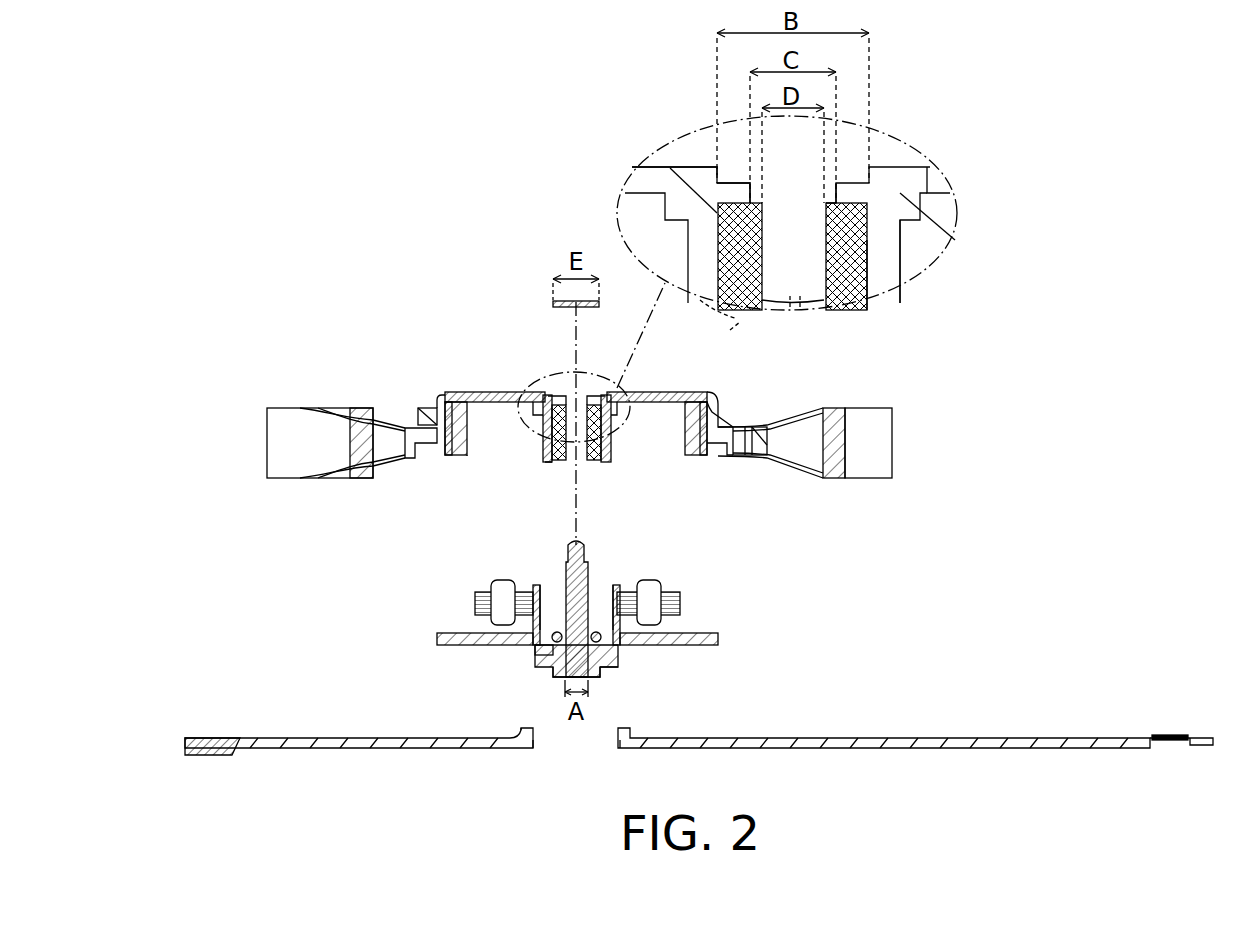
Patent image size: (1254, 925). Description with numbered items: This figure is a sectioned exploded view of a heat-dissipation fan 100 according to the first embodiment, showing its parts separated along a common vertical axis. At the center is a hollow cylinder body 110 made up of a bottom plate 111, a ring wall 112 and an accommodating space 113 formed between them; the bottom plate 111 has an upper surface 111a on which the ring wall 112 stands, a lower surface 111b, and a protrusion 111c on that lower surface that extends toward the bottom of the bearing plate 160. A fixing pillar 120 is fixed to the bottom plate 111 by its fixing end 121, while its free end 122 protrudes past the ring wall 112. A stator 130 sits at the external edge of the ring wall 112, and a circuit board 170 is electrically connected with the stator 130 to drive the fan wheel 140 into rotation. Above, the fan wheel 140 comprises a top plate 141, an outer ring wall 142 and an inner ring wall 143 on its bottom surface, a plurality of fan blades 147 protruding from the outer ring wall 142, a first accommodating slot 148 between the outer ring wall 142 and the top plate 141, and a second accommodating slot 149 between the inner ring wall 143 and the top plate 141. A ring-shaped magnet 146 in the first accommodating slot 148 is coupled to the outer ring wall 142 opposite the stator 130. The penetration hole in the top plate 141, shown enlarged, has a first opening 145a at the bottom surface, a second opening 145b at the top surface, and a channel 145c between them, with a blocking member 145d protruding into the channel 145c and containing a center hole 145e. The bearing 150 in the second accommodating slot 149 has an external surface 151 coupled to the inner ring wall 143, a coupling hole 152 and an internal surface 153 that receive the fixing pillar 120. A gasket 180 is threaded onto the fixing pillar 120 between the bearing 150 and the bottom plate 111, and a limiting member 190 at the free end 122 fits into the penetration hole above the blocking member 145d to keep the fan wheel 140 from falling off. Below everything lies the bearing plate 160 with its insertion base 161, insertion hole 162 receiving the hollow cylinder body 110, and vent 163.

The heat-dissipation fan 100 is at (326, 267).
The hollow cylinder body 110 is at (642, 572).
The bottom plate 111 is at (618, 660).
The upper surface 111a is at (612, 630).
The lower surface 111b is at (560, 678).
The protrusion 111c is at (612, 672).
The ring wall 112 is at (533, 630).
The accommodating space 113 is at (553, 610).
The fixing pillar 120 is at (530, 620).
The fixing end 121 is at (553, 668).
The free end 122 is at (572, 542).
The stator 130 is at (655, 590).
The fan wheel 140 is at (905, 428).
The top plate 141 is at (492, 392).
The outer ring wall 142 is at (428, 396).
The inner ring wall 143 is at (546, 395).
The first opening 145a is at (718, 206).
The second opening 145b is at (717, 177).
The channel 145c is at (750, 194).
The blocking member 145d is at (878, 208).
The center hole 145e is at (880, 195).
The ring-shaped magnet 146 is at (455, 455).
The fan blades 147 is at (287, 422).
The first accommodating slot 148 is at (505, 428).
The second accommodating slot 149 is at (748, 320).
The bearing 150 is at (840, 293).
The external surface 151 is at (880, 293).
The coupling hole 152 is at (787, 300).
The internal surface 153 is at (825, 293).
The bearing plate 160 is at (699, 739).
The insertion base 161 is at (506, 748).
The insertion hole 162 is at (562, 735).
The vent 163 is at (372, 748).
The circuit board 170 is at (437, 638).
The gasket 180 is at (552, 640).
The limiting member 190 is at (528, 338).